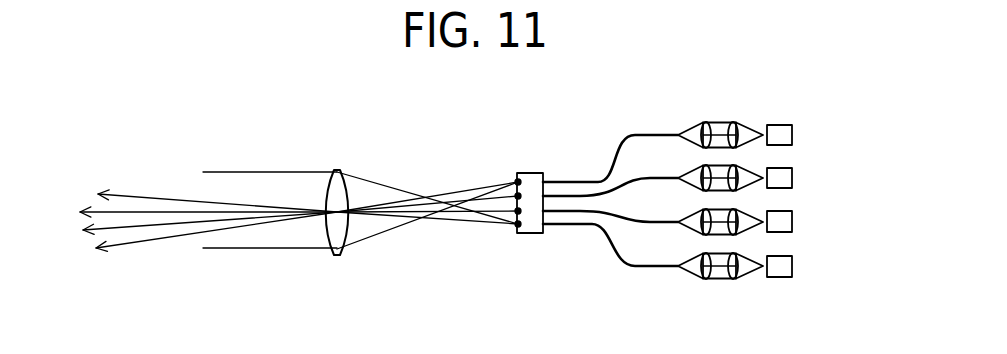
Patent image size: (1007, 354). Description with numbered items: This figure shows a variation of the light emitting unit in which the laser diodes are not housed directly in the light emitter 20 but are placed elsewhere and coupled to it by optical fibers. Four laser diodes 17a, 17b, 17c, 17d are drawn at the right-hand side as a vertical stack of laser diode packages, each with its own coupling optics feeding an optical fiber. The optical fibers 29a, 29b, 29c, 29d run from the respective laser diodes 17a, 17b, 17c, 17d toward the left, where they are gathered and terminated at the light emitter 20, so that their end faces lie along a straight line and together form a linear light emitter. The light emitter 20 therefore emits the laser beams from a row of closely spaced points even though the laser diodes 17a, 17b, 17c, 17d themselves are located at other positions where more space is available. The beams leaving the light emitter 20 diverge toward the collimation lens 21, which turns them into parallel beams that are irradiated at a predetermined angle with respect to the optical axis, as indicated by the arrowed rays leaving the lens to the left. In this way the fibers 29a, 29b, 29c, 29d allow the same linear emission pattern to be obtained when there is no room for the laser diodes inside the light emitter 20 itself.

The collimation lens 21 is at (338, 170).
The light emitter 20 is at (537, 172).
The optical fiber 29a is at (579, 182).
The optical fiber 29b is at (573, 197).
The optical fiber 29c is at (585, 213).
The optical fiber 29d is at (637, 267).
The laser diode 17a is at (780, 125).
The laser diode 17b is at (792, 168).
The laser diode 17c is at (782, 211).
The laser diode 17d is at (785, 277).